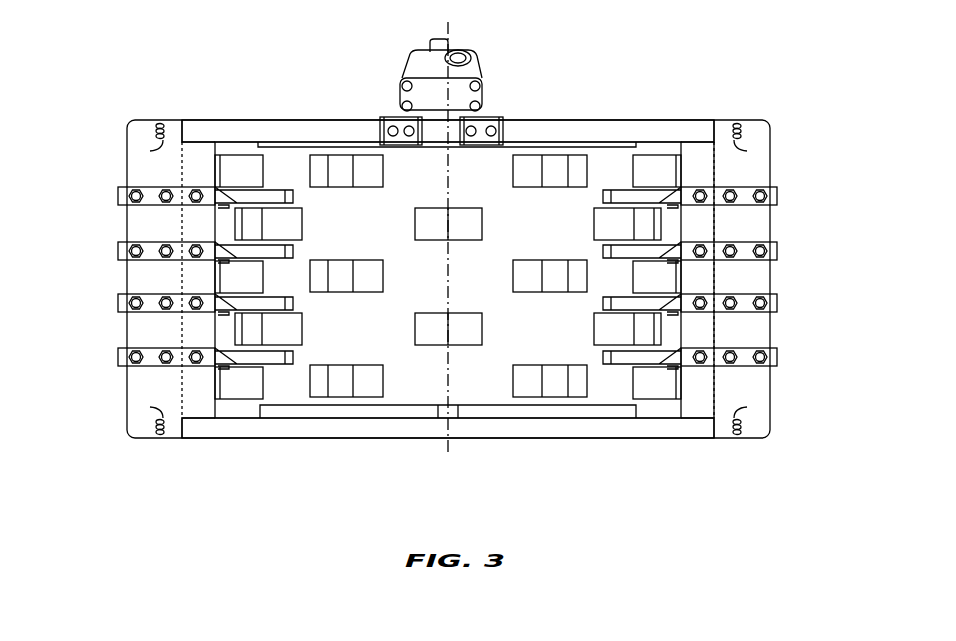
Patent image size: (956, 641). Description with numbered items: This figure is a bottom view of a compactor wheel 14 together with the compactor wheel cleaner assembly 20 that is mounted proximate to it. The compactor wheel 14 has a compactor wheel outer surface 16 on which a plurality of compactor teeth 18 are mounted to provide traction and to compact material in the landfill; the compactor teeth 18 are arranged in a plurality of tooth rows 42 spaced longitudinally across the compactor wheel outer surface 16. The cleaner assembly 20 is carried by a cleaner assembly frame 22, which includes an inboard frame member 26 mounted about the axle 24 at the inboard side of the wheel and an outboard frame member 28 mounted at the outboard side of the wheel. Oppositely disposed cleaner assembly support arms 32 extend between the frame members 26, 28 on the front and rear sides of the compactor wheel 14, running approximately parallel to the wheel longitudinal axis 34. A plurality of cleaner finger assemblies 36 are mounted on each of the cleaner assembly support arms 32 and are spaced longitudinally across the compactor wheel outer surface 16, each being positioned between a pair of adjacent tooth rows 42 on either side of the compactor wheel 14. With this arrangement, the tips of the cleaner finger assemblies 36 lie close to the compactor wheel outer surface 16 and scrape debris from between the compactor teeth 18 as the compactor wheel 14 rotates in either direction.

The compactor wheel 14 is at (550, 147).
The compactor wheel outer surface 16 is at (415, 397).
The compactor teeth 18 is at (568, 260).
The compactor wheel cleaner assembly 20 is at (124, 119).
The cleaner assembly frame 22 is at (167, 120).
The axle 24 is at (462, 72).
The inboard frame member 26 is at (205, 120).
The outboard frame member 28 is at (613, 428).
The cleaner assembly support arms 32 is at (752, 128).
The wheel longitudinal axis 34 is at (446, 32).
The cleaner finger assemblies 36 is at (120, 249).
The tooth rows 42 is at (148, 164).